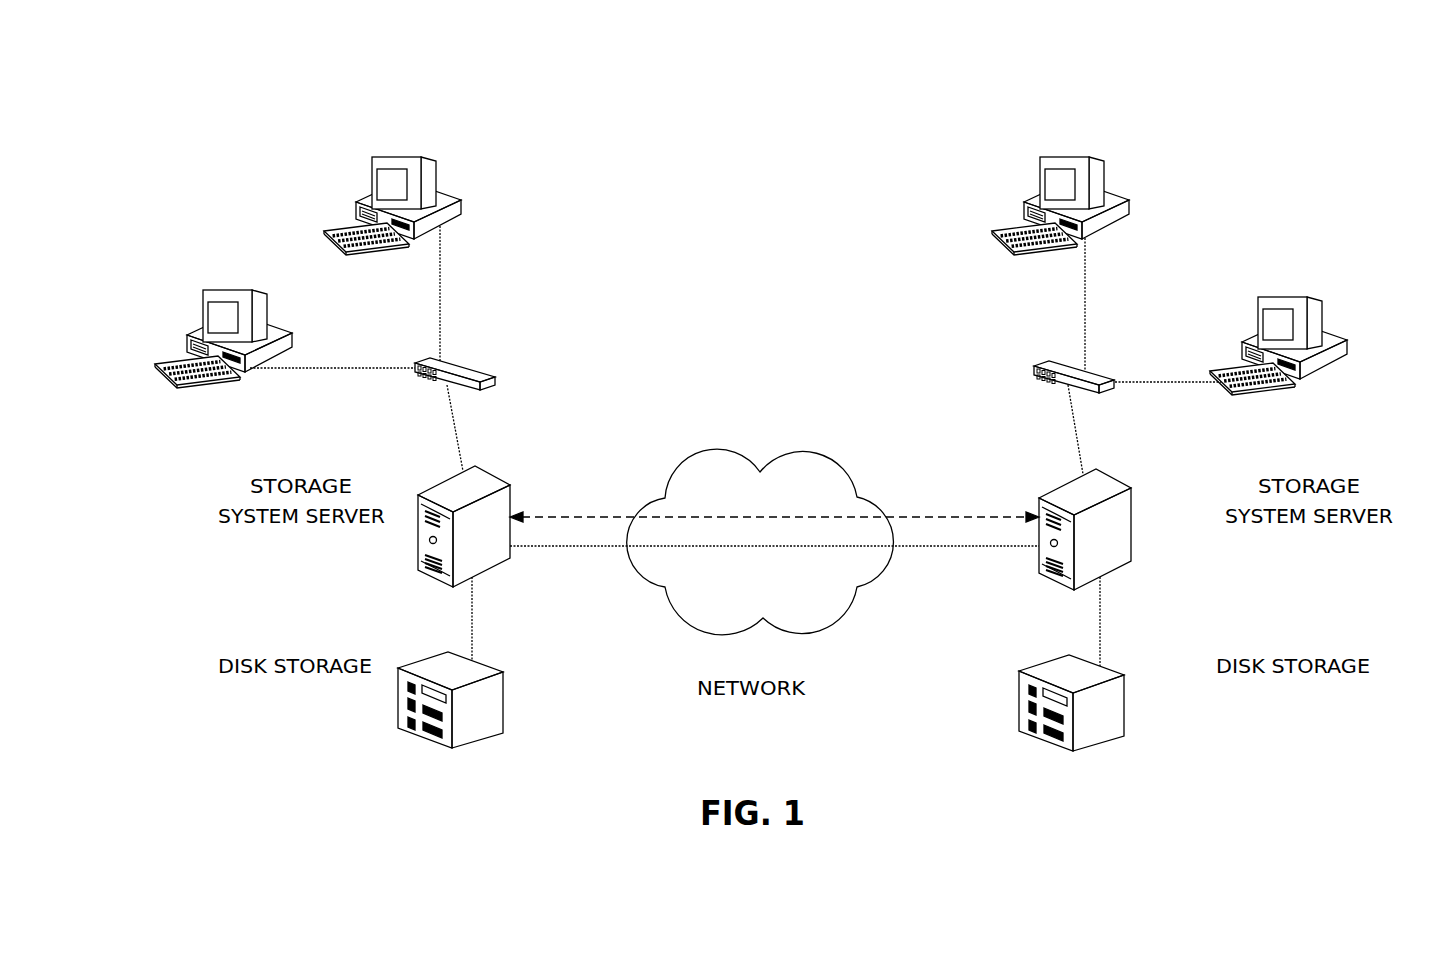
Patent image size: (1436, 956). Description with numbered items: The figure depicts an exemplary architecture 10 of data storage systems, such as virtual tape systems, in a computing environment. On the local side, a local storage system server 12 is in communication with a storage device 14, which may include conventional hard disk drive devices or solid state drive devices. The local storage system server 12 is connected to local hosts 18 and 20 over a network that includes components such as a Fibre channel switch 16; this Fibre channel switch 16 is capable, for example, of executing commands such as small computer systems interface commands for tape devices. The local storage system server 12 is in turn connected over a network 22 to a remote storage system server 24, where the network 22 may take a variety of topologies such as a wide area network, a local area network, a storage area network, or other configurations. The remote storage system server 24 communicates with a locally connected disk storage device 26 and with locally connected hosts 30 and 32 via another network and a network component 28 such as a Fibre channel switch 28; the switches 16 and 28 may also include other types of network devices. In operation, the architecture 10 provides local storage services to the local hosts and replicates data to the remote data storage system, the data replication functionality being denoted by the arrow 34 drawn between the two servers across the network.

The architecture 10 is at (1283, 125).
The local storage system server 12 is at (490, 473).
The storage device 14 is at (505, 702).
The Fibre channel switch 16 is at (460, 363).
The local host 18 is at (268, 313).
The local host 20 is at (437, 181).
The network 22 is at (836, 467).
The remote storage system server 24 is at (1130, 533).
The disk storage device 26 is at (1125, 708).
The Fibre channel switch 28 is at (1055, 362).
The host 30 is at (1105, 181).
The host 32 is at (1323, 320).
The arrow 34 is at (922, 517).